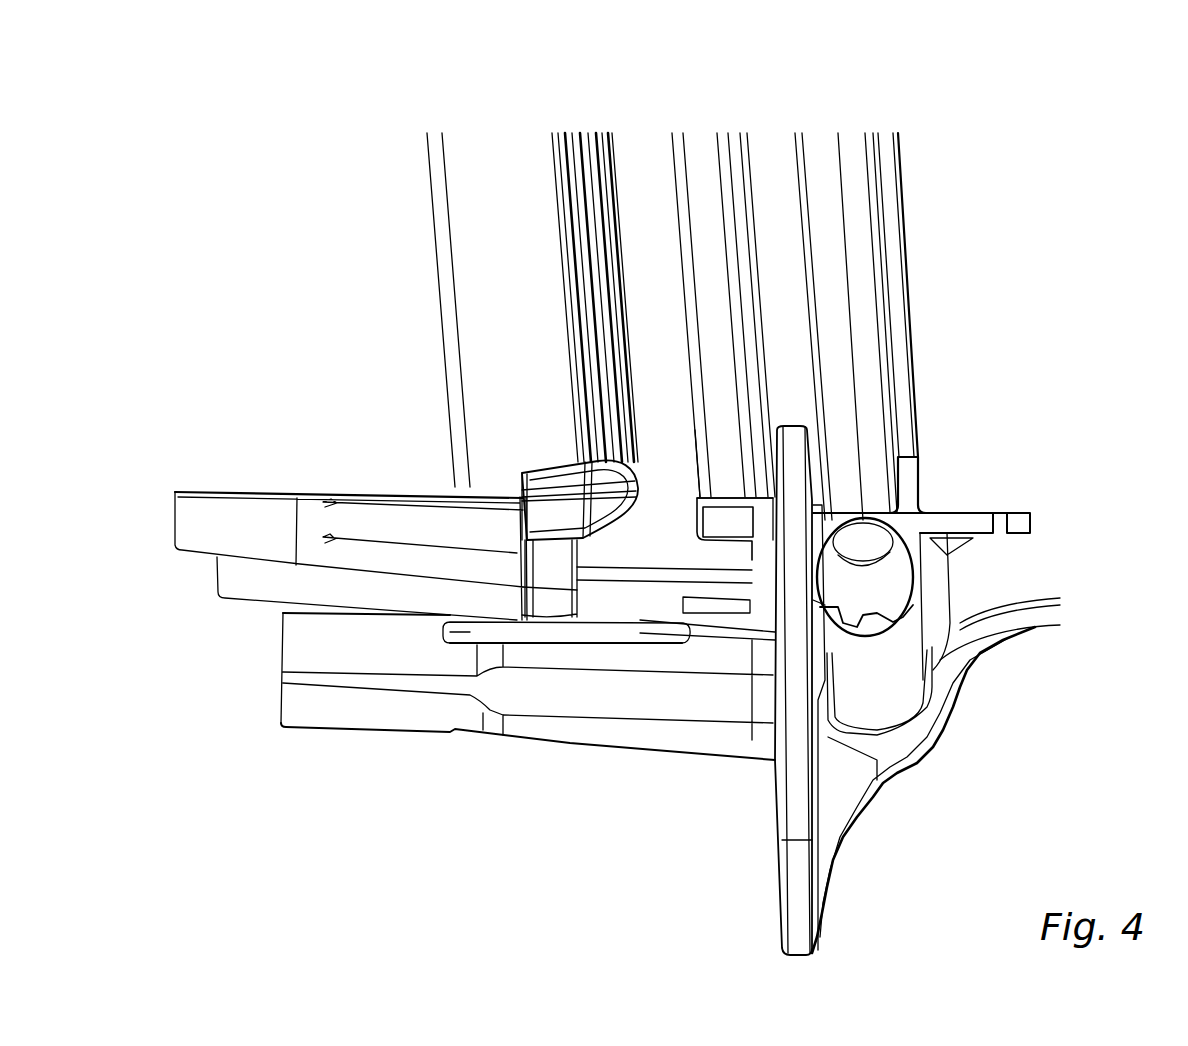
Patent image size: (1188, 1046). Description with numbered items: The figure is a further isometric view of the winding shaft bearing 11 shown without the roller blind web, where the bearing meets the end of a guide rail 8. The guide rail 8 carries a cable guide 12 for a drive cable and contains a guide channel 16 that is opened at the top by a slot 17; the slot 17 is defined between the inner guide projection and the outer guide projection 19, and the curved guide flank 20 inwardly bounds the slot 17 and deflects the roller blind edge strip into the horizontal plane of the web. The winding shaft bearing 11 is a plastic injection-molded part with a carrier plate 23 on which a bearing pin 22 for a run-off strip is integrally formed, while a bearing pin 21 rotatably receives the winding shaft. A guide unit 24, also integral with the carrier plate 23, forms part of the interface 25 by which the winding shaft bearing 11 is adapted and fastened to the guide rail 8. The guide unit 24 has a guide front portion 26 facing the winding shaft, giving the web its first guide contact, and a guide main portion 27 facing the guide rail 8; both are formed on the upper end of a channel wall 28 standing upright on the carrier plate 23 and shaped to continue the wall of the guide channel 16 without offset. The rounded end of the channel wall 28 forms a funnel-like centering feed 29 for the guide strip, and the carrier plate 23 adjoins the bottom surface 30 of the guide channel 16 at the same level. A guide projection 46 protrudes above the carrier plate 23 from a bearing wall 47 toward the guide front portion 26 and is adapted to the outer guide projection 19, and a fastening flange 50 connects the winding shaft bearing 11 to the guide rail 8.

The guide rail 8 is at (805, 128).
The winding shaft bearing 11 is at (760, 868).
The cable guide 12 is at (890, 567).
The guide channel 16 is at (672, 452).
The slot 17 is at (647, 150).
The outer guide projection 19 is at (707, 132).
The guide flank 20 is at (608, 148).
The bearing pin 21 is at (317, 660).
The bearing pin 22 is at (230, 522).
The carrier plate 23 is at (650, 622).
The guide unit 24 is at (513, 468).
The interface 25 is at (567, 463).
The guide front portion 26 is at (553, 517).
The guide main portion 27 is at (575, 484).
The channel wall 28 is at (540, 583).
The centering feed 29 is at (562, 597).
The bottom surface 30 is at (717, 470).
The guide projection 46 is at (725, 523).
The bearing wall 47 is at (797, 497).
The fastening flange 50 is at (1000, 583).